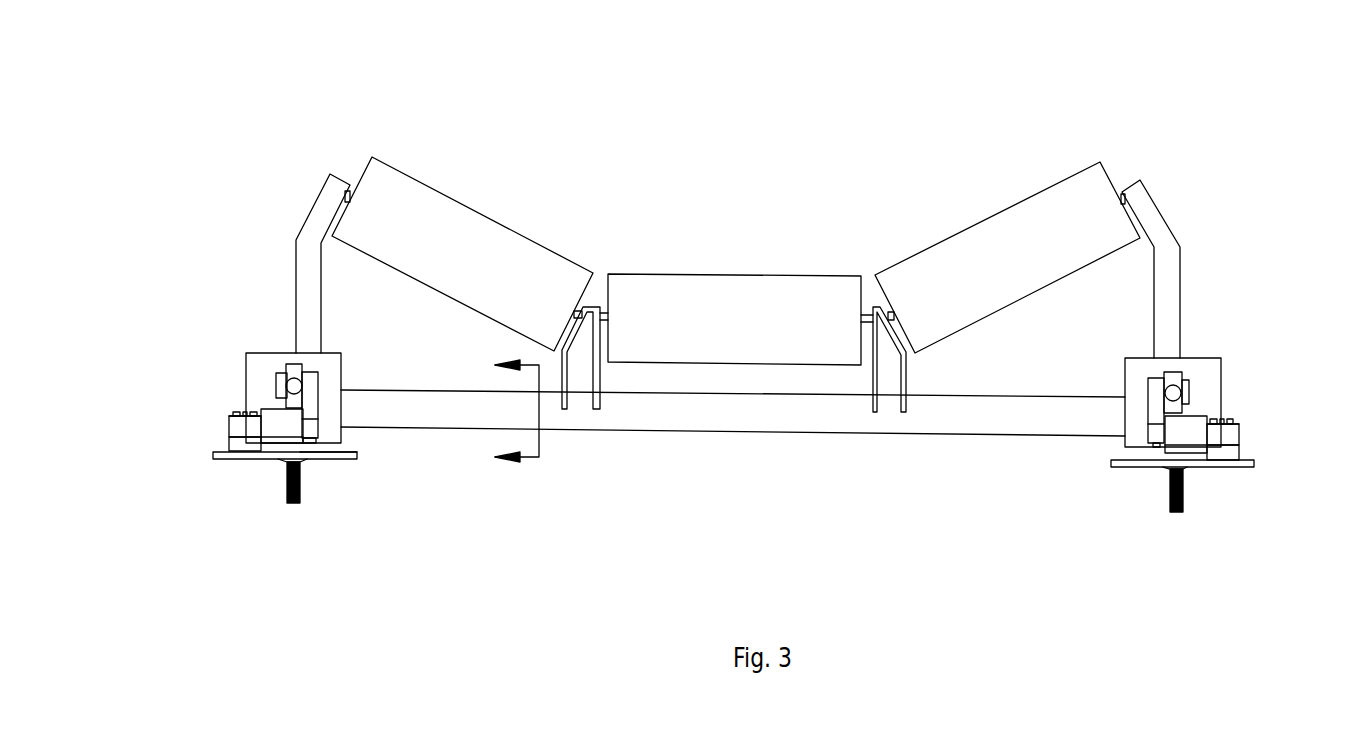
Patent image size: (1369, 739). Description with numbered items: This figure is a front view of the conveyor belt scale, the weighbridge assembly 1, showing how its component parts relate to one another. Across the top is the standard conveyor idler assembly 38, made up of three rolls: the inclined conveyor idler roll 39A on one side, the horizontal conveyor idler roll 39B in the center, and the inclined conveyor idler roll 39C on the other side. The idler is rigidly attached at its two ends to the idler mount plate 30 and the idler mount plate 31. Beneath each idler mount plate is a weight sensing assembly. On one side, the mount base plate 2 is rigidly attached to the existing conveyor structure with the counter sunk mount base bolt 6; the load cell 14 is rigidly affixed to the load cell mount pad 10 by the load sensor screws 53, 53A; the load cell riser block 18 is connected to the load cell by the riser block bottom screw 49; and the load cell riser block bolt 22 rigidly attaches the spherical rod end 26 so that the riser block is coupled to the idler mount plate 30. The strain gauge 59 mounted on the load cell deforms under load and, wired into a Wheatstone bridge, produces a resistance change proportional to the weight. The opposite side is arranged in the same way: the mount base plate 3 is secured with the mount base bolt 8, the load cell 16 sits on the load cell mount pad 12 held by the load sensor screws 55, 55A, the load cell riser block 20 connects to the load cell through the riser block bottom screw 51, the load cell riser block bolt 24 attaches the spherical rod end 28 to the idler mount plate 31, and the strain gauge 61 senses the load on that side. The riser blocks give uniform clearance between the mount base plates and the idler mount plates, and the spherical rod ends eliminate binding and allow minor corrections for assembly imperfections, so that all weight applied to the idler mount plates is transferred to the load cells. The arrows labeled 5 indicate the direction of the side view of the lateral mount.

The weighbridge assembly 1 is at (880, 170).
The mount base plate 2 is at (330, 461).
The mount base plate 3 is at (1133, 463).
The section line 5- 5 is at (507, 408).
The mount base bolt 6 is at (300, 503).
The mount base bolt 8 is at (1172, 495).
The load cell mount pad 10 is at (245, 447).
The load cell mount pad 12 is at (1223, 453).
The load cell 14 is at (243, 428).
The load cell 16 is at (1253, 462).
The load cell riser block 18 is at (308, 392).
The load cell riser block 20 is at (1155, 402).
The load cell riser block bolt 22 is at (283, 383).
The load cell riser block bolt 24 is at (1186, 392).
The spherical rod end 26 is at (293, 385).
The spherical rod end 28 is at (1173, 393).
The idler mount plate 30 is at (258, 392).
The idler mount plate 31 is at (1206, 399).
The conveyor idler assembly 38 is at (308, 282).
The conveyor idler roll 39A is at (418, 220).
The conveyor idler roll 39B is at (743, 312).
The conveyor idler roll 39C is at (1010, 243).
The riser block bottom screw 49 is at (327, 455).
The riser block bottom screw 51 is at (1153, 447).
The load sensor screw 53 is at (242, 417).
The load sensor screw 53A is at (240, 413).
The load sensor screw 55 is at (1237, 430).
The load sensor screw 55A is at (1233, 425).
The strain gauge 59 is at (284, 427).
The strain gauge 61 is at (1185, 438).